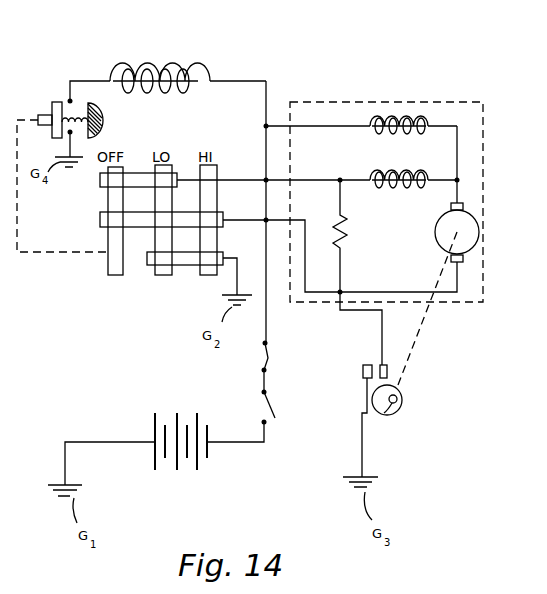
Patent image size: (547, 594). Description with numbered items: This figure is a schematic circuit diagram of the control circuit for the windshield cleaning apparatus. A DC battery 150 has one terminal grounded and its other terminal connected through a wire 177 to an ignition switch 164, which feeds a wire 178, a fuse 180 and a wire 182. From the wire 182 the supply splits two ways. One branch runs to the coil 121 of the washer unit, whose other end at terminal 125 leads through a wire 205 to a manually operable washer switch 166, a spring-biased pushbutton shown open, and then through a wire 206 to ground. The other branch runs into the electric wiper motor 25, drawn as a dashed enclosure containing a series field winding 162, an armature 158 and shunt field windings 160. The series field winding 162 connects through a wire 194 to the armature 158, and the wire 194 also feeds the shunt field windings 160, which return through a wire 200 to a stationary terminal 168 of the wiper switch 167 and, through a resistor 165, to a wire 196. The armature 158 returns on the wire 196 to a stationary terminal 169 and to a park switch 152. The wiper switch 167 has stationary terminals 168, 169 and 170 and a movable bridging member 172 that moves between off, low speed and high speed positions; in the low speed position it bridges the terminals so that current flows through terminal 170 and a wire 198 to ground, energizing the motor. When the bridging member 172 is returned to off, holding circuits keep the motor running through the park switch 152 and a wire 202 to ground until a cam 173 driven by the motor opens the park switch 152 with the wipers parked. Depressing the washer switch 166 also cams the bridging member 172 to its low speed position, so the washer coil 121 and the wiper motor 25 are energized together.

The electric wiper motor 25 is at (456, 98).
The coil 121 is at (153, 64).
The coil terminal wire 125 is at (201, 86).
The DC battery 150 is at (166, 414).
The park switch 152 is at (363, 372).
The armature 158 is at (468, 223).
The shunt field windings 160 is at (393, 177).
The series field winding 162 is at (412, 117).
The ignition switch 164 is at (272, 410).
The resistor 165 is at (345, 250).
The washer switch 166 is at (52, 104).
The wiper switch 167 is at (146, 280).
The stationary terminal 168 is at (100, 180).
The stationary terminal 169 is at (100, 220).
The stationary terminal 170 is at (188, 266).
The movable bridging member 172 is at (112, 267).
The cam 173 is at (390, 414).
The wire 177 is at (233, 447).
The wire 178 is at (263, 380).
The fuse 180 is at (268, 358).
The wire 182 is at (268, 319).
The wire 194 is at (459, 145).
The wire 196 is at (380, 292).
The wire 198 is at (238, 268).
The wire 200 is at (310, 179).
The wire 202 is at (360, 448).
The wire 205 is at (88, 80).
The wire 206 is at (62, 147).